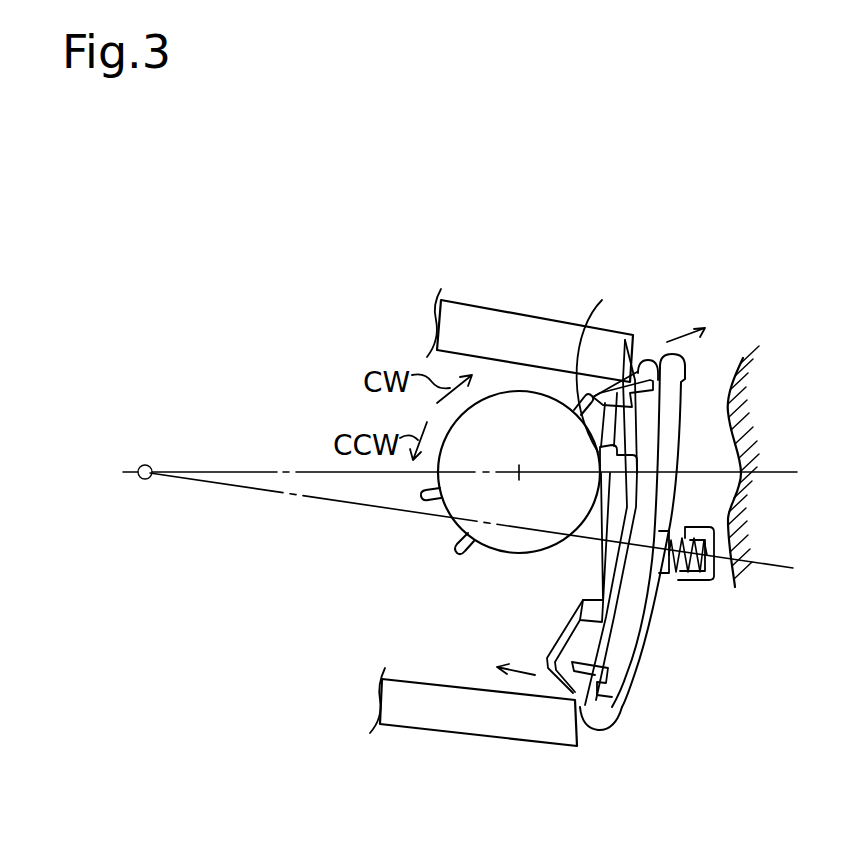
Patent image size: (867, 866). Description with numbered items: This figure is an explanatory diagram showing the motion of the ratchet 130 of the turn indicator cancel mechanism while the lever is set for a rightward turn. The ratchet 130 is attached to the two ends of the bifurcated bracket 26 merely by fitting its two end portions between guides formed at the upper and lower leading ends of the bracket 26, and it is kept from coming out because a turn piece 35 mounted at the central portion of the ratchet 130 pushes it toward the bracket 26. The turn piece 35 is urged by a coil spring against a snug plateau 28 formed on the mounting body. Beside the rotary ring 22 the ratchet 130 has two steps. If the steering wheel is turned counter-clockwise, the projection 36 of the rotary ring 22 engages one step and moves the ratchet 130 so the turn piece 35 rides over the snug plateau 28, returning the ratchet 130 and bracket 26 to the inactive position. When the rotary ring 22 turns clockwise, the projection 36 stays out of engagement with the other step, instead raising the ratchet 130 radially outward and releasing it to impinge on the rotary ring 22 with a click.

The rotary ring 22 is at (500, 557).
The bracket 26 is at (555, 322).
The snug plateau 28 is at (730, 514).
The turn piece 35 is at (703, 583).
The projection 36 is at (607, 368).
The ratchet 130 is at (632, 668).